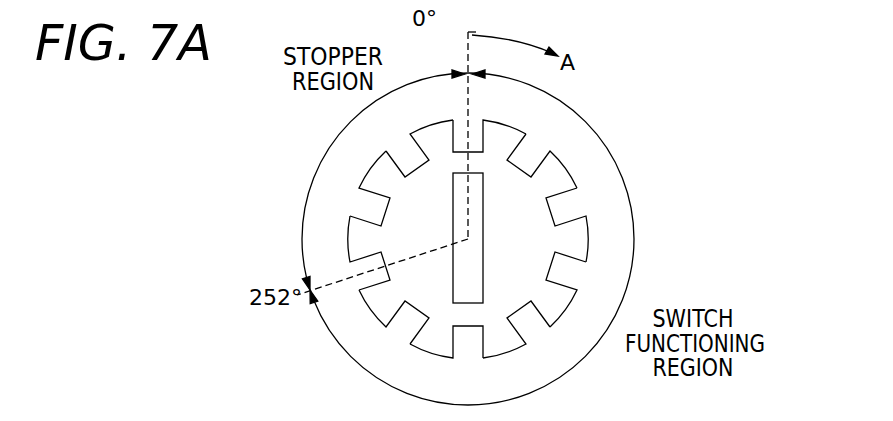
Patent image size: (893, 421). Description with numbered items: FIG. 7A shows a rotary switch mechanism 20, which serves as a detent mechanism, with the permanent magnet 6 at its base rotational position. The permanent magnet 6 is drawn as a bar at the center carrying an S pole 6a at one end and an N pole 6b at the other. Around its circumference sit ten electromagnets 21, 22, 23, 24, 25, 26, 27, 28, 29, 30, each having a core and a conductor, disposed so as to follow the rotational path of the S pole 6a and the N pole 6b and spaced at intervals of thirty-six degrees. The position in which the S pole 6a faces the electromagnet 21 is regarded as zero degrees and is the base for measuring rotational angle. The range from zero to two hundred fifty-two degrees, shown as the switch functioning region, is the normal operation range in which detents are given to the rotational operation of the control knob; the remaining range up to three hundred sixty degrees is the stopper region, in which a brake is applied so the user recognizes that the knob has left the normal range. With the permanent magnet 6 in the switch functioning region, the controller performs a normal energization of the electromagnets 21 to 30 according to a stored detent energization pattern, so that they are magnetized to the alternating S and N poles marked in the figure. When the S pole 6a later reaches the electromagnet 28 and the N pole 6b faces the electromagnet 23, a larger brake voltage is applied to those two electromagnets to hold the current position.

The rotary switch mechanism 20 is at (592, 82).
The electromagnet 21 is at (453, 128).
The electromagnet 22 is at (513, 133).
The electromagnet 23 is at (566, 178).
The electromagnet 24 is at (588, 245).
The electromagnet 25 is at (562, 312).
The electromagnet 26 is at (486, 346).
The electromagnet 27 is at (432, 353).
The electromagnet 28 is at (372, 310).
The electromagnet 29 is at (358, 219).
The electromagnet 30 is at (373, 168).
The permanent magnet 6 is at (466, 239).
The S pole 6a is at (483, 174).
The N pole 6b is at (465, 305).